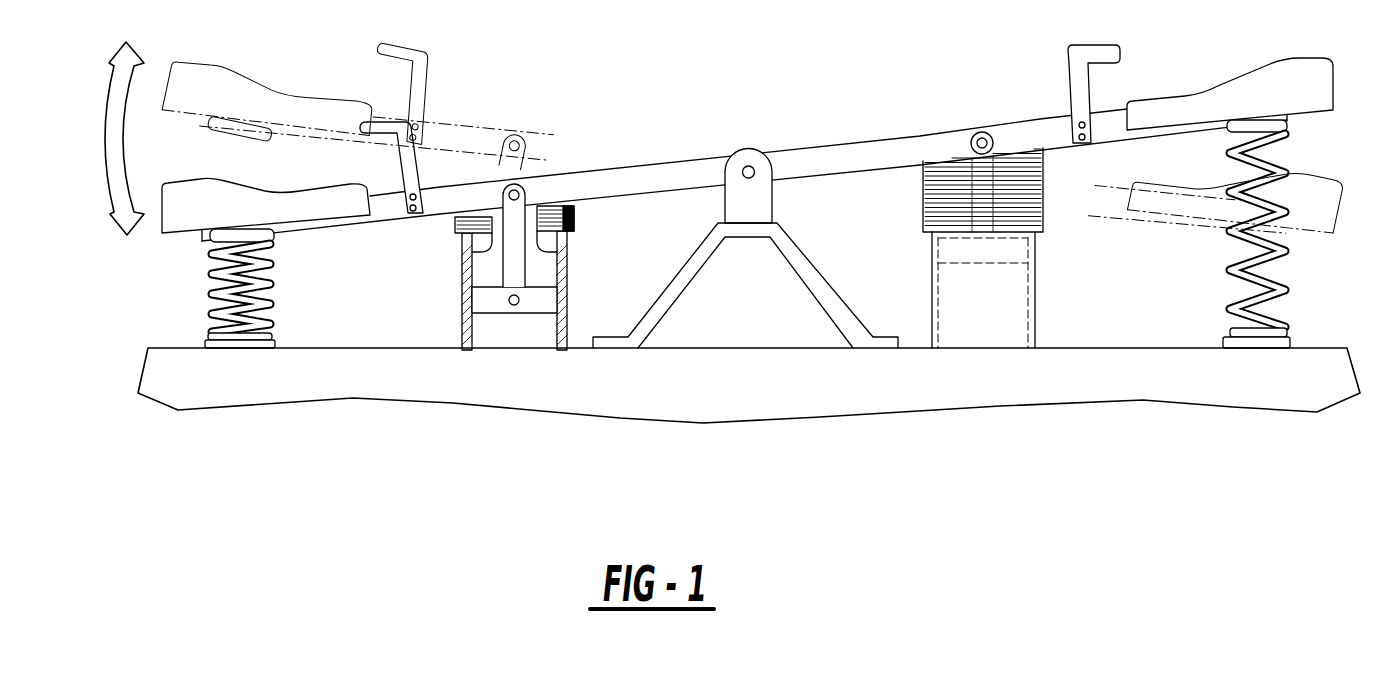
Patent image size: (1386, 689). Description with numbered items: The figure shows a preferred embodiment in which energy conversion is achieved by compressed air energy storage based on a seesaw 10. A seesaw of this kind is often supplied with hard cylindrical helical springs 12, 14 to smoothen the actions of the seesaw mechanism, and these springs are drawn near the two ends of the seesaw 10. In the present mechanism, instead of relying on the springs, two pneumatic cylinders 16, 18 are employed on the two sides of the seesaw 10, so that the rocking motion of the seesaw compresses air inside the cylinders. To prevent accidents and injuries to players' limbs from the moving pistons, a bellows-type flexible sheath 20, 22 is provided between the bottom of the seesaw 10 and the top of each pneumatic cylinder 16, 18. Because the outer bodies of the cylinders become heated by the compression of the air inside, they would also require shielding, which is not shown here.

The seesaw 10 is at (818, 152).
The hard cylindrical helical spring 12 is at (212, 279).
The hard cylindrical helical spring 14 is at (1283, 286).
The pneumatic cylinder 16 is at (462, 313).
The pneumatic cylinder 18 is at (1037, 280).
The bellows-type flexible sheath 20 is at (570, 217).
The bellows-type flexible sheath 22 is at (925, 198).